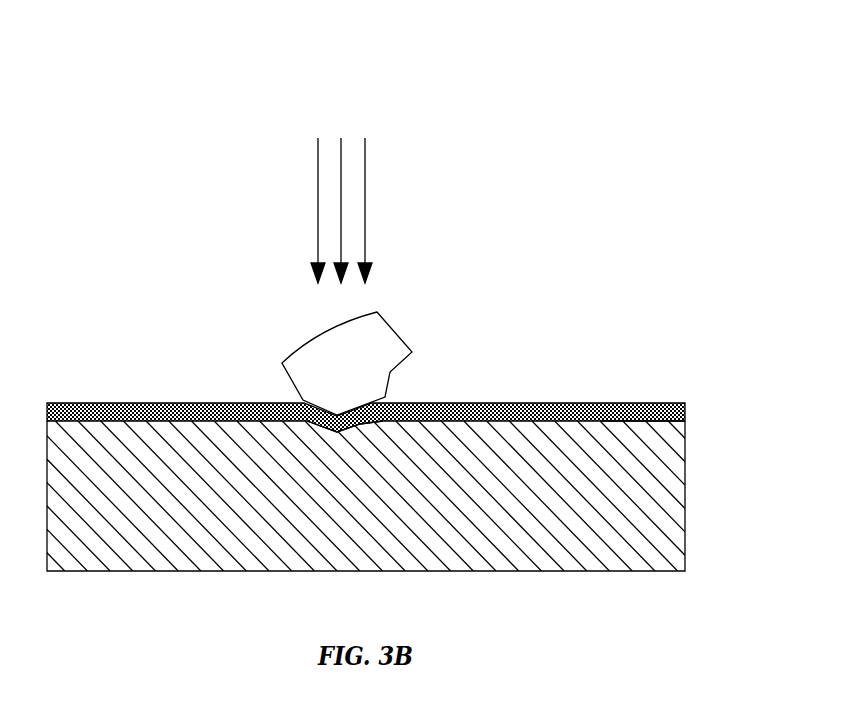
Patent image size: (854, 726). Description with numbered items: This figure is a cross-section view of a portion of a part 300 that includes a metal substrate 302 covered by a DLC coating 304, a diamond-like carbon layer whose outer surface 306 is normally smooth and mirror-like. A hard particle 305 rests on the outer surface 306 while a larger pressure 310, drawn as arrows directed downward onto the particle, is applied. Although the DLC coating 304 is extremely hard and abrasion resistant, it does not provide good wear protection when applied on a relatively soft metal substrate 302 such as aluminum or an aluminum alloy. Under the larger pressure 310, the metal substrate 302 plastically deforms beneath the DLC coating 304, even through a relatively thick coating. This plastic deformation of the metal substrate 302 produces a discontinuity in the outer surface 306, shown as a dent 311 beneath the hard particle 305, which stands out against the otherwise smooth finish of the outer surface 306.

The part 300 is at (407, 354).
The metal substrate 302 is at (379, 505).
The DLC coating 304 is at (686, 410).
The hard particle 305 is at (359, 376).
The outer surface 306 is at (596, 403).
The larger pressure 310 is at (358, 210).
The dent 311 is at (366, 429).